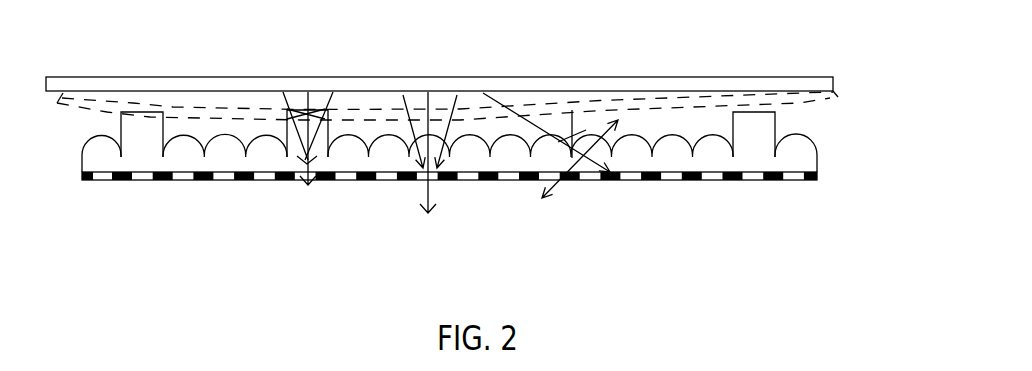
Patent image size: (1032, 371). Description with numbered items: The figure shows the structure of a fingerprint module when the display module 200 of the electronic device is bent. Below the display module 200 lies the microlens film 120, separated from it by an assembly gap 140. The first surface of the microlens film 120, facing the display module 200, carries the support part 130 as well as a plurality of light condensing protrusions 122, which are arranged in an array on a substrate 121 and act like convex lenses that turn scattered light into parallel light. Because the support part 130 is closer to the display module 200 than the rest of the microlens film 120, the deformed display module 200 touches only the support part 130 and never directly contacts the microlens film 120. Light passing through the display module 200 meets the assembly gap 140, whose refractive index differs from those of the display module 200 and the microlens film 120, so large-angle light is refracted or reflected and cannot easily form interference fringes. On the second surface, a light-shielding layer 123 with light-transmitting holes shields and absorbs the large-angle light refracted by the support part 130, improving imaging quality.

The display module 200 is at (593, 88).
The assembly gap 140 is at (793, 112).
The support part 130 is at (755, 123).
The microlens film 120 is at (449, 211).
The substrate 121 is at (762, 181).
The light condensing protrusions 122 is at (673, 136).
The light-shielding layer 123 is at (770, 238).